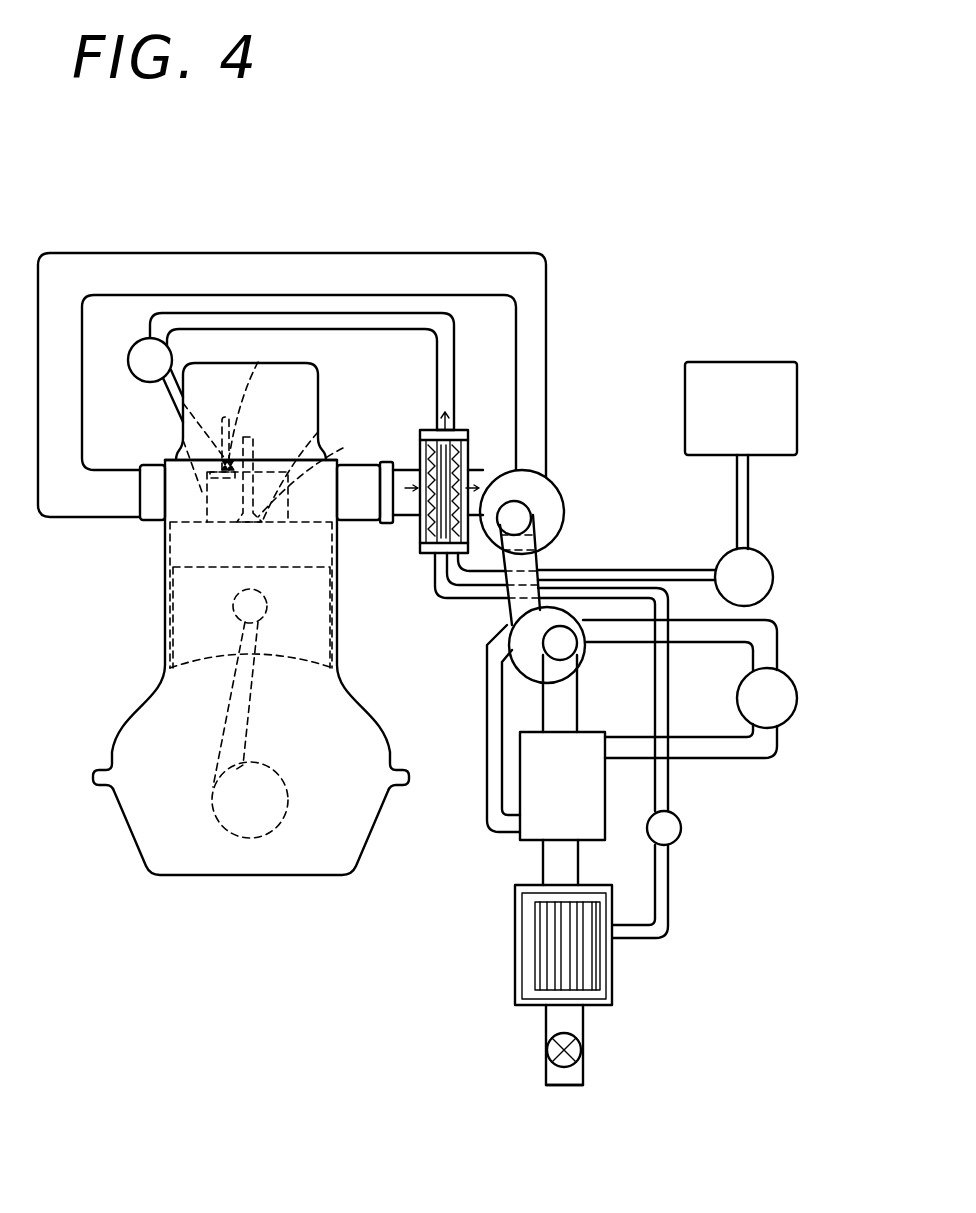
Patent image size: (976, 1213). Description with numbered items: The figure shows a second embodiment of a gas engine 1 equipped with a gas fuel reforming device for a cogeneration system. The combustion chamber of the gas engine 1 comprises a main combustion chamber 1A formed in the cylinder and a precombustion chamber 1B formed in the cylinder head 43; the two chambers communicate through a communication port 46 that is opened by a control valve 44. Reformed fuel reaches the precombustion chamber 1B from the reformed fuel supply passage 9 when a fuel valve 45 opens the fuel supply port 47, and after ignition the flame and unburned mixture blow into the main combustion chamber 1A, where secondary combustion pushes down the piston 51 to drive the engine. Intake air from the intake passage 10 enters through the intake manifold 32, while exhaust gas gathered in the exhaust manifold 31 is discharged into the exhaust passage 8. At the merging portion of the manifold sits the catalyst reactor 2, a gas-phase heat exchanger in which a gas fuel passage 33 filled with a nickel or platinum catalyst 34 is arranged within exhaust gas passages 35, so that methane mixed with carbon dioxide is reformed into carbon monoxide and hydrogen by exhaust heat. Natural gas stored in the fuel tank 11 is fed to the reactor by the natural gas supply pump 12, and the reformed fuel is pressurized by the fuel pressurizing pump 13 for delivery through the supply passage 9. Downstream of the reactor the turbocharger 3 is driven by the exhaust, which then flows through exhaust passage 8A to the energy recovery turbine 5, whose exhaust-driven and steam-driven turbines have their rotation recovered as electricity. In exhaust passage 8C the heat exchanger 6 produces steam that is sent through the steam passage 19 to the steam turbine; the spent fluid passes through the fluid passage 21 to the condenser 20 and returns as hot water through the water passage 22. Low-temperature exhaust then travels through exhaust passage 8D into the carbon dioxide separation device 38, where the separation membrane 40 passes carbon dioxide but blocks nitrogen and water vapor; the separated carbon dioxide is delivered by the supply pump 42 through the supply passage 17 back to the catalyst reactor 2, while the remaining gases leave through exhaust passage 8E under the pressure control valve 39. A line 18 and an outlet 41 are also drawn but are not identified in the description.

The gas engine 1 is at (157, 563).
The main combustion chamber 1A is at (262, 560).
The precombustion chamber 1B is at (270, 483).
The catalyst reactor 2 is at (456, 432).
The turbocharger 3 is at (541, 496).
The energy recovery turbine 5 is at (520, 645).
The heat exchanger 6 is at (545, 815).
The exhaust passage 8 is at (402, 486).
The exhaust passage 8A is at (525, 563).
The exhaust passage 8C is at (568, 705).
The exhaust passage 8D is at (580, 868).
The exhaust passage 8E is at (575, 1025).
The reformed fuel supply passage 9 is at (373, 330).
The intake passage 10 is at (488, 262).
The fuel tank 11 is at (740, 378).
The natural gas supply pump 12 is at (757, 568).
The fuel pressurizing pump 13 is at (142, 357).
The CO2 supply passage 17 is at (472, 594).
The pressure passage 18 is at (683, 571).
The steam passage 19 is at (485, 762).
The condenser 20 is at (778, 695).
The fluid passage 21 is at (765, 648).
The water passage 22 is at (728, 758).
The exhaust manifold 31 is at (353, 502).
The intake manifold 32 is at (152, 512).
The gas fuel passage 33 is at (425, 534).
The catalyst 34 is at (430, 511).
The exhaust gas passages 35 is at (436, 435).
The CO2 separation device 38 is at (512, 992).
The pressure control valve 39 is at (548, 1057).
The CO2 separation membrane 40 is at (535, 943).
The tail pipe outlet 41 is at (566, 1082).
The CO2 supply pump 42 is at (673, 832).
The cylinder head 43 is at (177, 451).
The control valve 44 is at (318, 472).
The fuel valve 45 is at (250, 403).
The communication port 46 is at (262, 524).
The fuel supply port 47 is at (220, 492).
The piston 51 is at (305, 628).